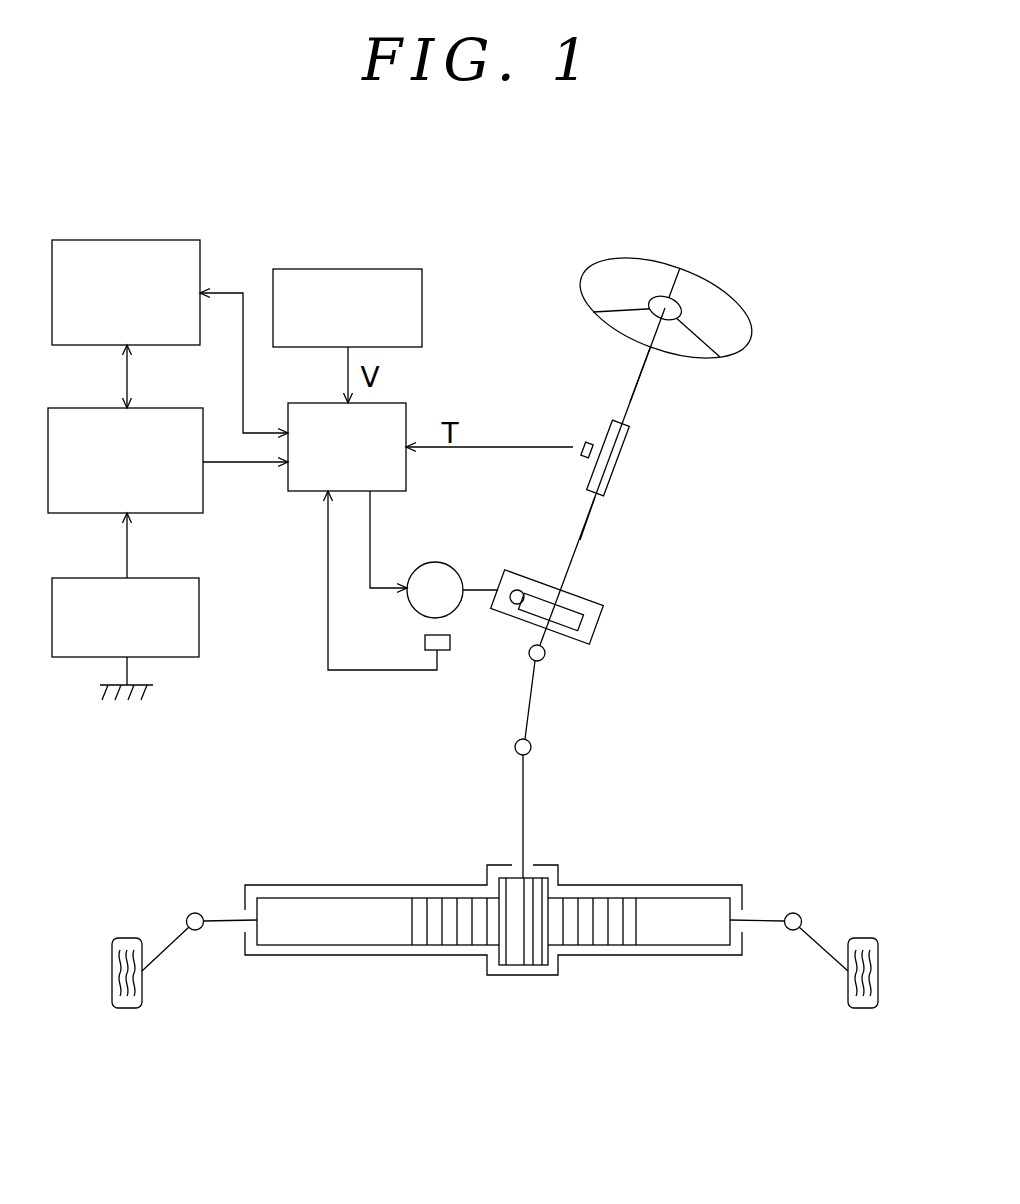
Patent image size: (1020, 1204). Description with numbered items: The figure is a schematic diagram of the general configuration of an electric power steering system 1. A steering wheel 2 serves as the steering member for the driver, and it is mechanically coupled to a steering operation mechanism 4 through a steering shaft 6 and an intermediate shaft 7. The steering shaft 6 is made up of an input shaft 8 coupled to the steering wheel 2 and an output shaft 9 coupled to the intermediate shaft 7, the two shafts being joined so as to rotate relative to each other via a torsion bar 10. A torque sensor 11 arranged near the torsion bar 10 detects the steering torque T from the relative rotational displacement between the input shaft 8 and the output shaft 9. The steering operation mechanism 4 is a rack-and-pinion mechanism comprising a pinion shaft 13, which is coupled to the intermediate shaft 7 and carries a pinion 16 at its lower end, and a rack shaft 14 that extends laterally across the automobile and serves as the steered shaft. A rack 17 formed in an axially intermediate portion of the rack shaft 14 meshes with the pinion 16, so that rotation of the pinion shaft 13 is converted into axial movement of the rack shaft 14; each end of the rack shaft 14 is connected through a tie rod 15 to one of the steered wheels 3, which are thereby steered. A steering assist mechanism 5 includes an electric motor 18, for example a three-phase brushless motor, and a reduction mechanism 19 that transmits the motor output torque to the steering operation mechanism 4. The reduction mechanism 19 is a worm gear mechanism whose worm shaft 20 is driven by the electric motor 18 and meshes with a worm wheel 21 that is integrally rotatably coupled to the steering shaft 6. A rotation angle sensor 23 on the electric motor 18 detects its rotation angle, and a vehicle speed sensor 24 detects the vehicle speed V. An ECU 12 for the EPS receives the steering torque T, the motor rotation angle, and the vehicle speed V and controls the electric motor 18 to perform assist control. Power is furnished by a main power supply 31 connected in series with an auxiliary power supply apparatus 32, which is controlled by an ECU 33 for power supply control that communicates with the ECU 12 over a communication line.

The electric power steering system 1 is at (659, 542).
The steering wheel 2 is at (752, 330).
The steered wheels 3 is at (127, 938).
The steering operation mechanism 4 is at (493, 927).
The steering assist mechanism 5 is at (528, 568).
The steering shaft 6 is at (642, 372).
The intermediate shaft 7 is at (530, 700).
The input shaft 8 is at (630, 403).
The output shaft 9 is at (580, 540).
The torsion bar 10 is at (612, 462).
The torque sensor 11 is at (582, 443).
The ECU for the EPS 12 is at (295, 492).
The pinion shaft 13 is at (523, 803).
The rack shaft 14 is at (683, 947).
The tie rod 15 is at (172, 945).
The pinion 16 is at (523, 958).
The rack 17 is at (433, 937).
The electric motor 18 is at (433, 562).
The reduction mechanism 19 is at (560, 588).
The worm shaft 20 is at (510, 607).
The worm wheel 21 is at (572, 617).
The rotation angle sensor 23 is at (425, 642).
The vehicle speed sensor 24 is at (318, 269).
The main power supply 31 is at (82, 577).
The auxiliary power supply apparatus 32 is at (82, 408).
The ECU for power supply control 33 is at (80, 240).